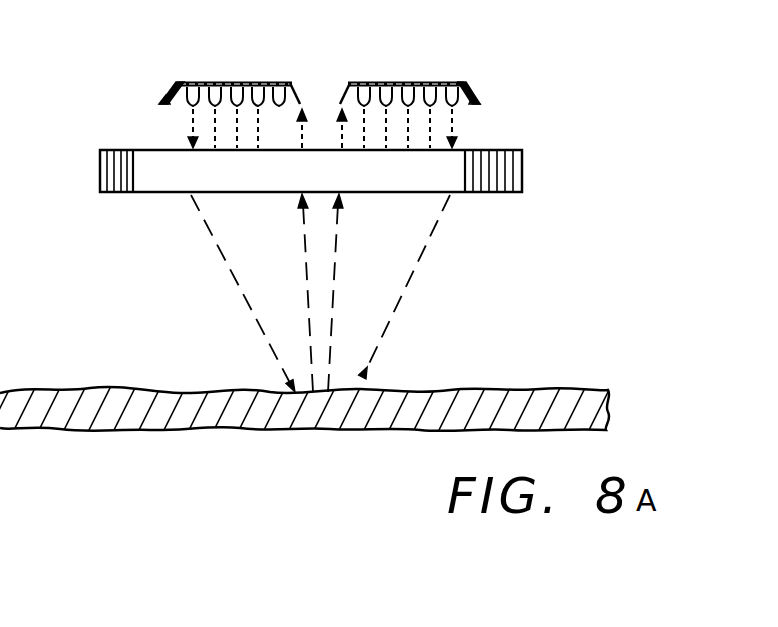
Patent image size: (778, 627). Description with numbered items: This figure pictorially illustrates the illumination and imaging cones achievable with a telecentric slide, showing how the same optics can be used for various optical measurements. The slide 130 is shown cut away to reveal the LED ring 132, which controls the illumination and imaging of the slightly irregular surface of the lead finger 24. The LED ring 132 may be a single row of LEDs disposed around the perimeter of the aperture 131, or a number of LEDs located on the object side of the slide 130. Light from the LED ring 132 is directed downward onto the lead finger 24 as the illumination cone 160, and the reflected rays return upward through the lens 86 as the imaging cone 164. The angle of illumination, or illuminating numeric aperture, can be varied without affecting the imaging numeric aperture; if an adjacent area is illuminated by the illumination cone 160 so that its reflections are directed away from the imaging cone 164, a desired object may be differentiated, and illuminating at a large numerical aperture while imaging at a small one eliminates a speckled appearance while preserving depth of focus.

The lead finger 24 is at (610, 405).
The lens 86 is at (524, 165).
The slide 130 is at (468, 92).
The aperture 131 is at (341, 93).
The LED ring 132 is at (193, 103).
The illumination cone 160 is at (380, 340).
The imaging cone 164 is at (337, 260).